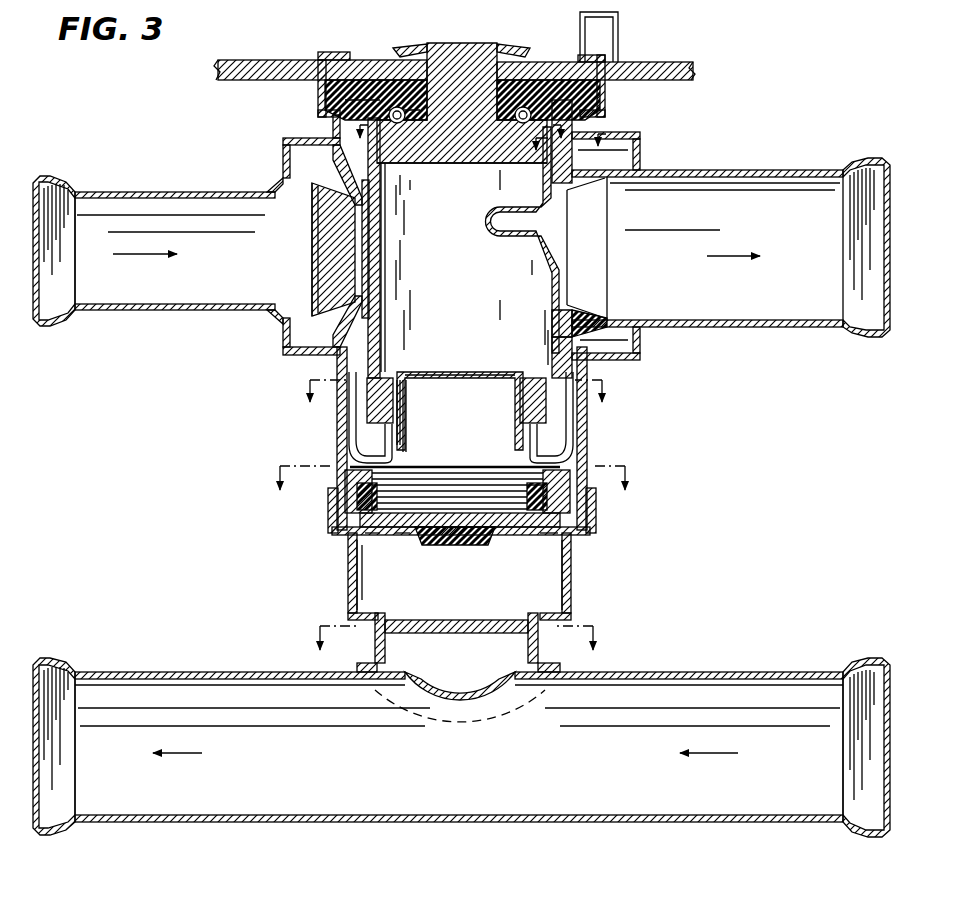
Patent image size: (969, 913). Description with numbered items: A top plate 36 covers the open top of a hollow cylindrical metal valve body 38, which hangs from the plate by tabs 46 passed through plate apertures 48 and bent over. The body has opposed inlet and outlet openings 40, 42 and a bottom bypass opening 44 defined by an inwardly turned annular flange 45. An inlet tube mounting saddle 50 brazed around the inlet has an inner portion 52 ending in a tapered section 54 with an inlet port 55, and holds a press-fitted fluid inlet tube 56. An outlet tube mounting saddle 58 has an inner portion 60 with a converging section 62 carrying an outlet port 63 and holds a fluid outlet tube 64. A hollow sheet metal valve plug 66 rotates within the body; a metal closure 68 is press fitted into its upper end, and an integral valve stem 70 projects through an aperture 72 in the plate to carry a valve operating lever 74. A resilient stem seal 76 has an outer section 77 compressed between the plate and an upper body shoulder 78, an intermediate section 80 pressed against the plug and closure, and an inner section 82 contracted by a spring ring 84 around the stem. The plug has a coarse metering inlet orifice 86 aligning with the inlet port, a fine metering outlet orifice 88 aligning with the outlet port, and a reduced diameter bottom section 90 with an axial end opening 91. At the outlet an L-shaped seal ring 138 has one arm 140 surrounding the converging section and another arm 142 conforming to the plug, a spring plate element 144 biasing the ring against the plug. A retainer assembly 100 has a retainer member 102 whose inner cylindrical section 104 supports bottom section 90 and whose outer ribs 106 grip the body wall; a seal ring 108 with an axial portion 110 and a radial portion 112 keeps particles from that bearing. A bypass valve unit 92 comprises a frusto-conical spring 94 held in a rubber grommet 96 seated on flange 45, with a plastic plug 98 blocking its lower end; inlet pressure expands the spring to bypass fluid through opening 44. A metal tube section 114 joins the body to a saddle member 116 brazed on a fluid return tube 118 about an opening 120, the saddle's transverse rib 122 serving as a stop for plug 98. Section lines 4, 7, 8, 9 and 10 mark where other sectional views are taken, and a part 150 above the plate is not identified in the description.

The top plate 36 is at (262, 60).
The tabs 46 is at (335, 52).
The plate apertures 48 is at (322, 58).
The lead wire 150 is at (610, 22).
The valve stem 70 is at (468, 50).
The closure 68 is at (478, 163).
The valve operating lever 74 is at (415, 46).
The aperture 72 is at (505, 48).
The outer annular section 77 is at (328, 86).
The stem seal 76 is at (604, 98).
The upper body shoulder 78 is at (330, 106).
The intermediate annular section 80 is at (388, 85).
The spring ring 84 is at (392, 92).
The inner section 82 is at (405, 123).
The valve body 38 is at (338, 398).
The inner portion 52 is at (283, 150).
The inlet tube mounting saddle 50 is at (305, 137).
The inlet opening 40 is at (350, 178).
The tapered section 54 is at (357, 200).
The inlet port 55 is at (366, 233).
The coarse metering inlet orifice 86 is at (396, 256).
The valve plug 66 is at (448, 223).
The fine metering outlet orifice 88 is at (528, 245).
The outlet port 63 is at (563, 300).
The inwardly converging section 62 is at (583, 308).
The arm 140 is at (605, 315).
The seal ring 138 is at (550, 318).
The arm 142 is at (550, 338).
The outlet tube mounting saddle 58 is at (640, 137).
The spring plate element 144 is at (640, 158).
The inner portion 60 is at (637, 345).
The outlet opening 42 is at (618, 358).
The open bottom section 90 is at (408, 375).
The axial end opening 91 is at (508, 375).
The radial portion 112 is at (400, 392).
The seal ring 108 is at (520, 404).
The axial portion 110 is at (400, 408).
The inner cylindrical section 104 is at (410, 437).
The outer ribs 106 is at (348, 437).
The retainer assembly 100 is at (580, 442).
The retainer member 102 is at (575, 458).
The grommet 96 is at (345, 500).
The bypass valve unit 92 is at (512, 542).
The plastic plug 98 is at (458, 545).
The spring 94 is at (403, 535).
The bypass opening 44 is at (378, 528).
The annular flange 45 is at (553, 530).
The tube section 114 is at (571, 568).
The saddle member 116 is at (540, 662).
The transverse rib 122 is at (450, 634).
The opening 120 is at (480, 682).
The fluid inlet tube 56 is at (168, 192).
The fluid outlet tube 64 is at (745, 170).
The fluid return tube 118 is at (592, 822).
The section line 4 is at (460, 123).
The section line 10 is at (567, 133).
The section line 7 is at (454, 389).
The section line 8 is at (449, 474).
The section line 9 is at (454, 631).